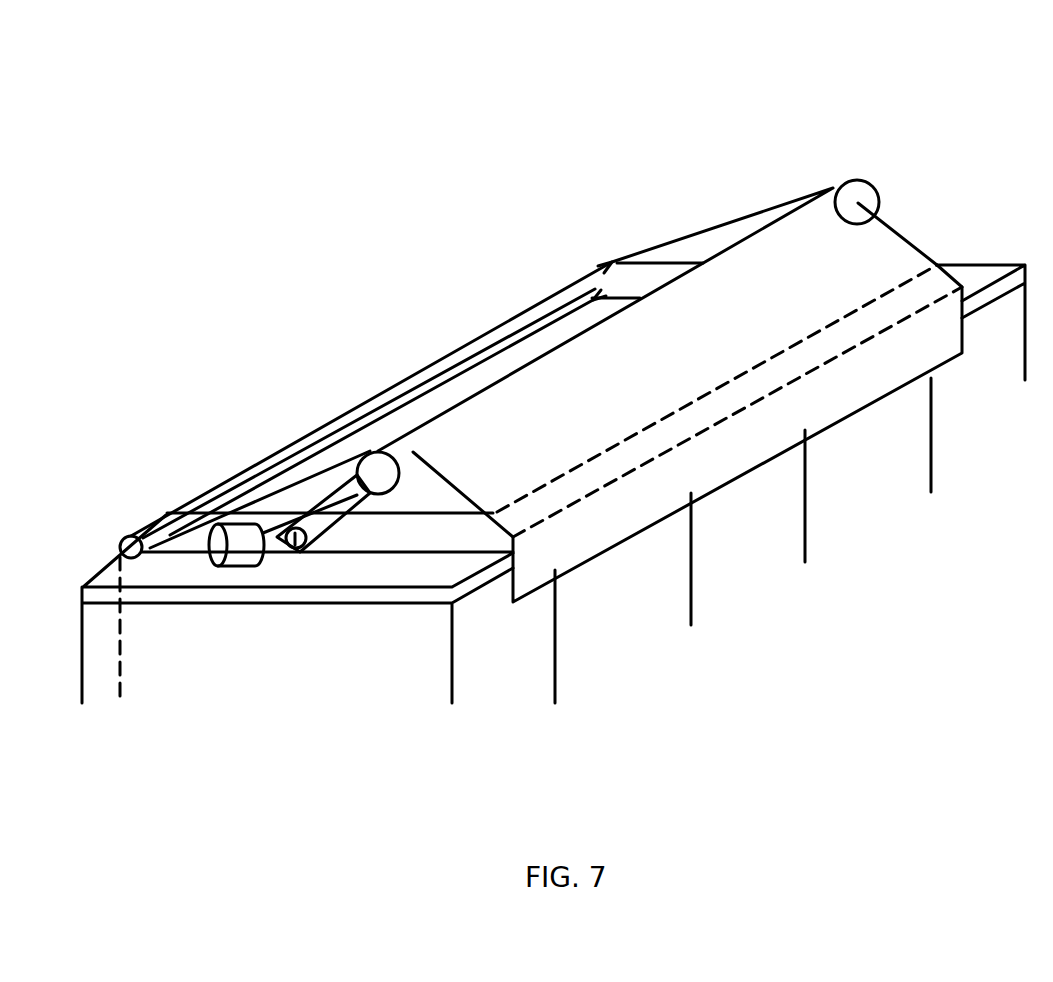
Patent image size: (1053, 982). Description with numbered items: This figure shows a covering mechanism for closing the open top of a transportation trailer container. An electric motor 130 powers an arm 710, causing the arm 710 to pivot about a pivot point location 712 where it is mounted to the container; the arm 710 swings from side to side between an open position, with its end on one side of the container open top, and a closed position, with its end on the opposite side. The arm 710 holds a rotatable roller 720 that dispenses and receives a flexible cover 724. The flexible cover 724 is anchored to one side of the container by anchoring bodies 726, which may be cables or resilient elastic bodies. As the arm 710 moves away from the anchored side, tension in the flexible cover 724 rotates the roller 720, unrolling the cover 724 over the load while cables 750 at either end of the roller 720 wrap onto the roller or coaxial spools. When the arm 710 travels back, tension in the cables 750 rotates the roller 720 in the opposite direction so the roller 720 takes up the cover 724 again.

The electric motor 130 is at (232, 538).
The arm 710 is at (327, 517).
The pivot point location 712 is at (293, 550).
The rotatable roller 720 is at (397, 458).
The flexible cover 724 is at (690, 307).
The anchoring bodies 726 is at (930, 488).
The cables 750 is at (158, 658).